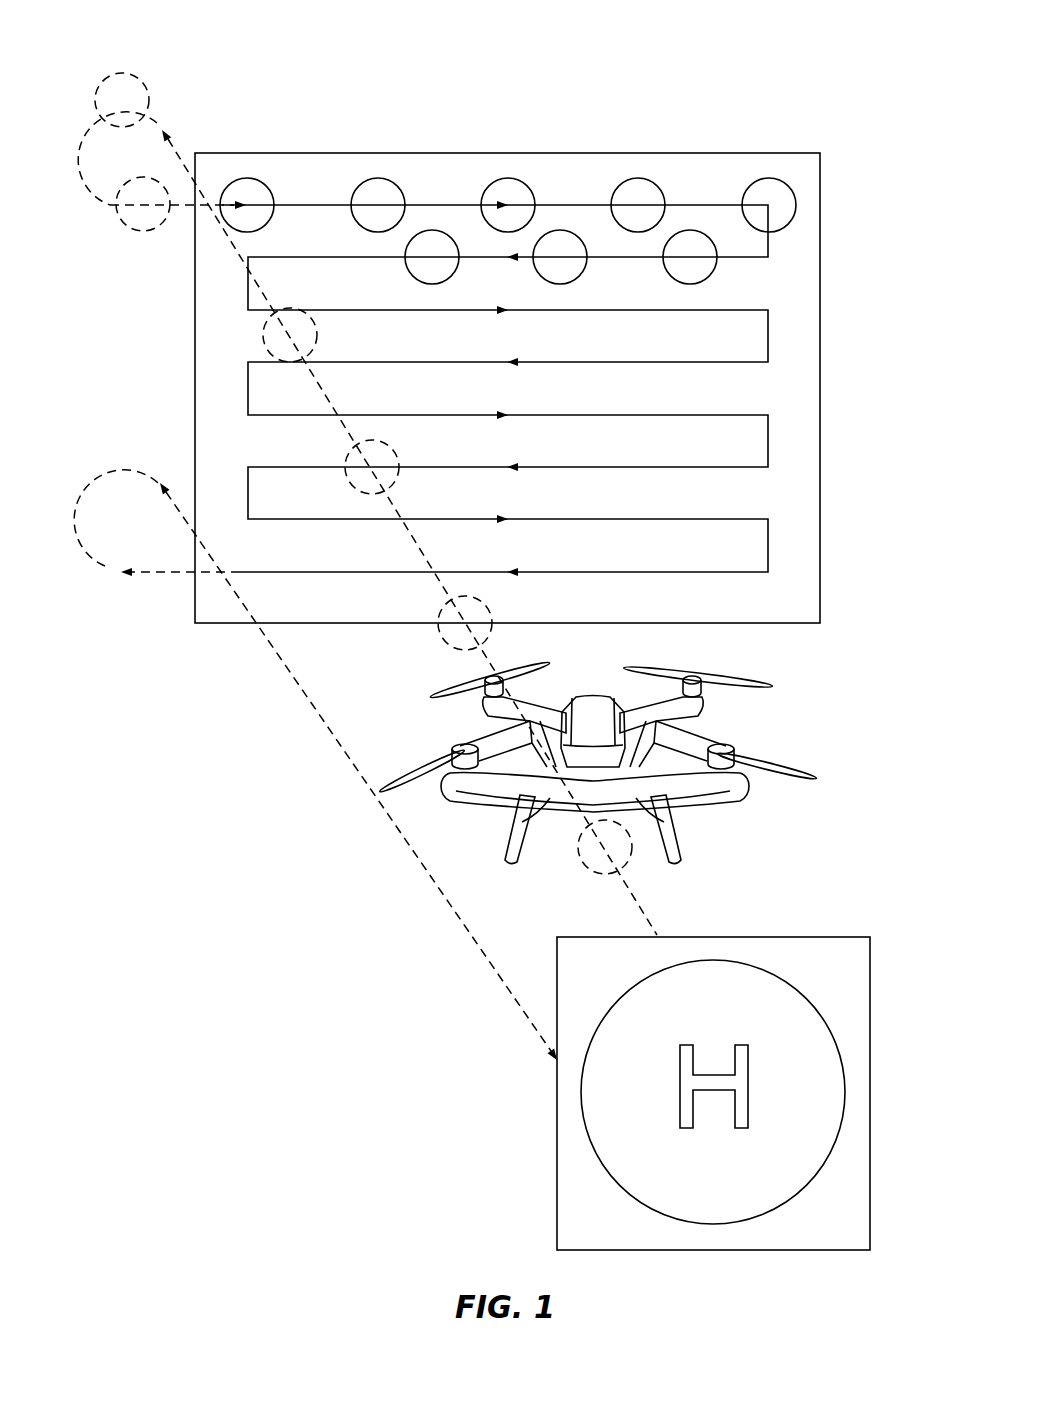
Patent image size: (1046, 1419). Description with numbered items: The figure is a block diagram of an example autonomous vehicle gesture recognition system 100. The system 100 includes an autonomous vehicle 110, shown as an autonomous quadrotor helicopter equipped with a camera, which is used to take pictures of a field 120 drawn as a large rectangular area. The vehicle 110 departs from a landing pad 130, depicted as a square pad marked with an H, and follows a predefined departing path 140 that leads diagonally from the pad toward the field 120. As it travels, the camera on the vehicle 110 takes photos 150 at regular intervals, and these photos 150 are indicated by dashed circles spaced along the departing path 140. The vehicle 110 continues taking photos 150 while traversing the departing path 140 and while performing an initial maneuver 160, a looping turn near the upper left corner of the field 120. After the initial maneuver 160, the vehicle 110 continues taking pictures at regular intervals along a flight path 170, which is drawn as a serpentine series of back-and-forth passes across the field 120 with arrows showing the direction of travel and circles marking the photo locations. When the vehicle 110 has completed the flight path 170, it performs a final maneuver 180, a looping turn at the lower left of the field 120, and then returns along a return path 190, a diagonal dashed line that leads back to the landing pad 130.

The autonomous vehicle gesture recognition system 100 is at (850, 57).
The autonomous vehicle 110 is at (747, 755).
The field 120 is at (820, 568).
The landing pad 130 is at (742, 935).
The departing path 140 is at (653, 927).
The photos 150 is at (580, 862).
The initial maneuver 160 is at (157, 127).
The flight path 170 is at (432, 205).
The final maneuver 180 is at (170, 572).
The return path 190 is at (328, 730).